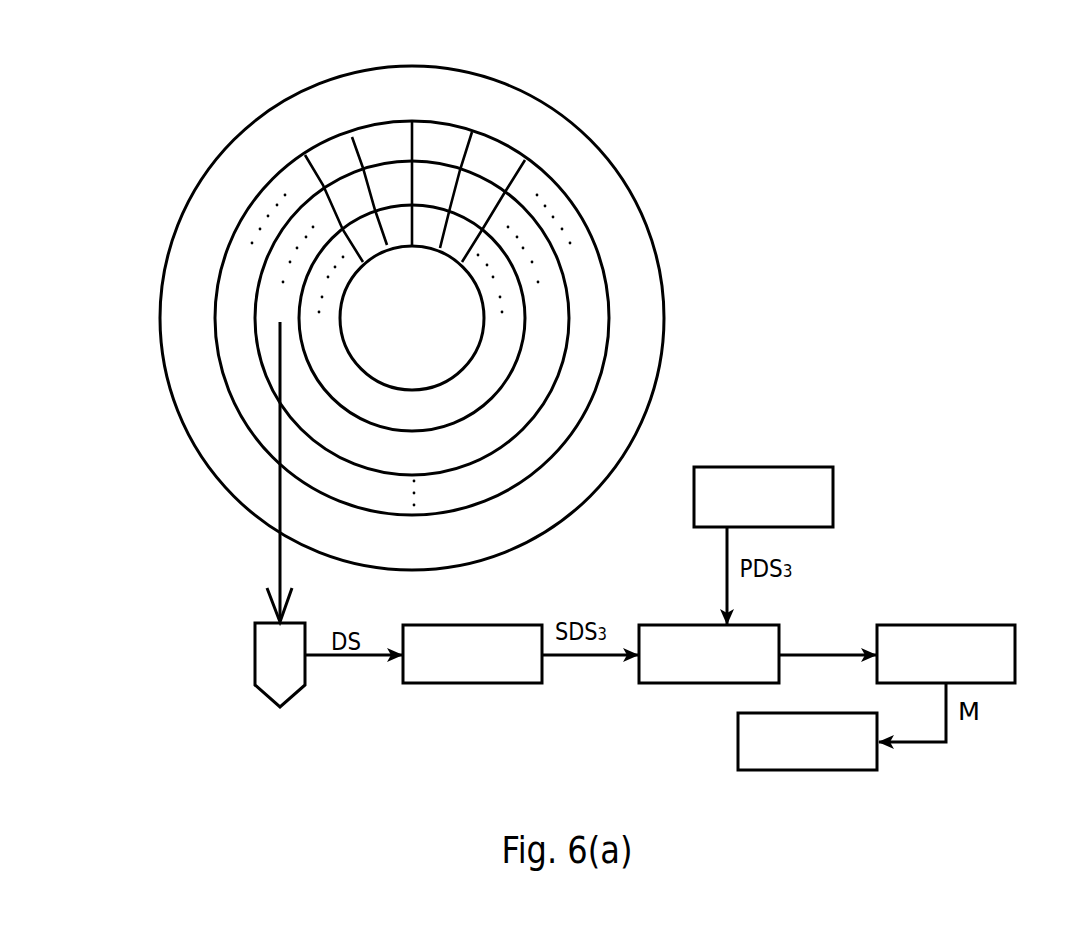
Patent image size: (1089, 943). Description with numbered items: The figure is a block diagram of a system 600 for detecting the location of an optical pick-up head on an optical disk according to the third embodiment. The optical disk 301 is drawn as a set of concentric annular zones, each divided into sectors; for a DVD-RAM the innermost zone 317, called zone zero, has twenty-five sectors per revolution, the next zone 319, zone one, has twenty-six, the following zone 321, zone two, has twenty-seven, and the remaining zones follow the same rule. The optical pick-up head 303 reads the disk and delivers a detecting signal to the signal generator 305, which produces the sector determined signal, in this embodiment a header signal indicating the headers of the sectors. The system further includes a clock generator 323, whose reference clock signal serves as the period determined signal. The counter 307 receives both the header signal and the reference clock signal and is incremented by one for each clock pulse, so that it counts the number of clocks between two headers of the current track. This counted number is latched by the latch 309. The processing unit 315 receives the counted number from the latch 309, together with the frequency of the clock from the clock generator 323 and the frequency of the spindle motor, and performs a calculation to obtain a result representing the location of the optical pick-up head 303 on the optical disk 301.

The system 600 is at (938, 270).
The optical disk 301 is at (638, 315).
The optical pick-up head 303 is at (256, 656).
The signal generator 305 is at (518, 625).
The counter 307 is at (675, 625).
The latch 309 is at (948, 625).
The processing unit 315 is at (808, 771).
The innermost zone 317 is at (502, 370).
The next zone 319 is at (552, 350).
The zone 321 is at (595, 285).
The clock generator 323 is at (765, 467).